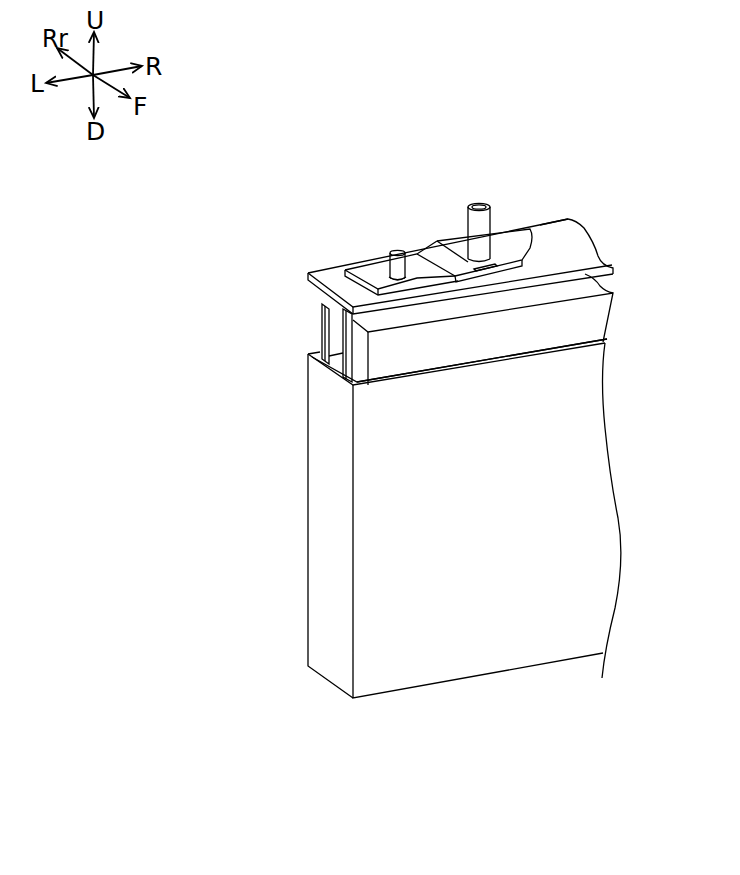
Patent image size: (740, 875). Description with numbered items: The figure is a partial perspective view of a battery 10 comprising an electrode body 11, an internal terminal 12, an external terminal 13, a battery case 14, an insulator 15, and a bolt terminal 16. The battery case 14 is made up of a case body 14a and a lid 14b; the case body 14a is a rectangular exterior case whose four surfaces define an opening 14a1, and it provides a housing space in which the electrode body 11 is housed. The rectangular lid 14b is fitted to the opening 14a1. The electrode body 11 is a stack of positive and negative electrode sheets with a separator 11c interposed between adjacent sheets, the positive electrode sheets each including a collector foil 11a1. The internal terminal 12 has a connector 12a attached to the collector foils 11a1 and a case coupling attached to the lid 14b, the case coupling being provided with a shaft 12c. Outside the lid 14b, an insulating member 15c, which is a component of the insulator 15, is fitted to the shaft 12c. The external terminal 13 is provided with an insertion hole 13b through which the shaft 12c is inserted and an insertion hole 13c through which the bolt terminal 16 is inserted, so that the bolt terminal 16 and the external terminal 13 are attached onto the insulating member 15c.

The battery 10 is at (302, 217).
The electrode body 11 is at (260, 338).
The collector foil 11a1 is at (320, 350).
The separator 11c is at (330, 383).
The internal terminal 12 is at (307, 297).
The connector 12a is at (320, 338).
The shaft 12c is at (395, 252).
The external terminal 13 is at (429, 235).
The insertion hole 13b is at (390, 268).
The insertion hole 13c is at (467, 250).
The battery case 14 is at (280, 482).
The case body 14a is at (313, 527).
The opening 14a1 is at (460, 362).
The lid 14b is at (550, 243).
The insulator 15 is at (535, 258).
The insulating member 15c is at (457, 267).
The bolt terminal 16 is at (477, 207).